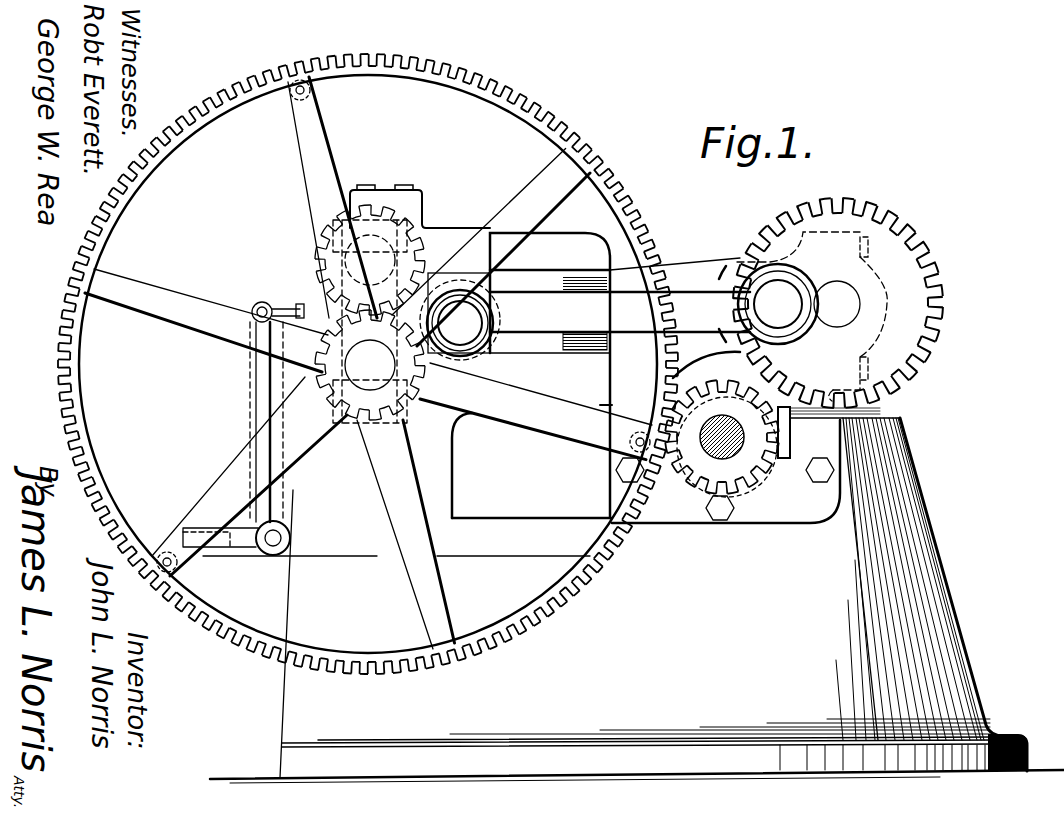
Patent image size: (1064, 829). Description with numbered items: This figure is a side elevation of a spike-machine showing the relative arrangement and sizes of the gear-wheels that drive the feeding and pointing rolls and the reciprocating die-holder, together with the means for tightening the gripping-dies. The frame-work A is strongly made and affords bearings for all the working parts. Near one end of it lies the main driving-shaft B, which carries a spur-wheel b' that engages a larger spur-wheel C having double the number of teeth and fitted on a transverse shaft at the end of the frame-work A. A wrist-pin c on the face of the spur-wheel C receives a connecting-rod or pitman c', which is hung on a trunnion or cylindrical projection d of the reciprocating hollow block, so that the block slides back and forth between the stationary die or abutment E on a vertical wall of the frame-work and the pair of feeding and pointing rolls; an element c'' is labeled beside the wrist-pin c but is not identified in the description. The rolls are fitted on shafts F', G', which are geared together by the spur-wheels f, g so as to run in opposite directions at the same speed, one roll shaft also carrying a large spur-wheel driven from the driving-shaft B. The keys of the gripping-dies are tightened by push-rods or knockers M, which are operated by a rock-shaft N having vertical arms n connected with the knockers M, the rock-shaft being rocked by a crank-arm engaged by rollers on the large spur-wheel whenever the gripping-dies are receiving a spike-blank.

The frame-work A is at (633, 594).
The main driving-shaft B is at (721, 436).
The spur-wheel b' is at (706, 357).
The spur-wheels C is at (838, 303).
The wrist-pins c is at (778, 304).
The connecting-rods or pitmen c' is at (620, 304).
The wrist pin c'' is at (837, 304).
The trunnions or cylindrical projections d is at (460, 316).
The stationary die or abutment E is at (580, 283).
The spur-wheel f is at (420, 206).
The shaft F' is at (370, 260).
The shaft G' is at (370, 365).
The spur-wheel g is at (357, 416).
The push-rods or knockers M is at (276, 308).
The rock-shaft N is at (273, 548).
The vertical arms n is at (258, 414).